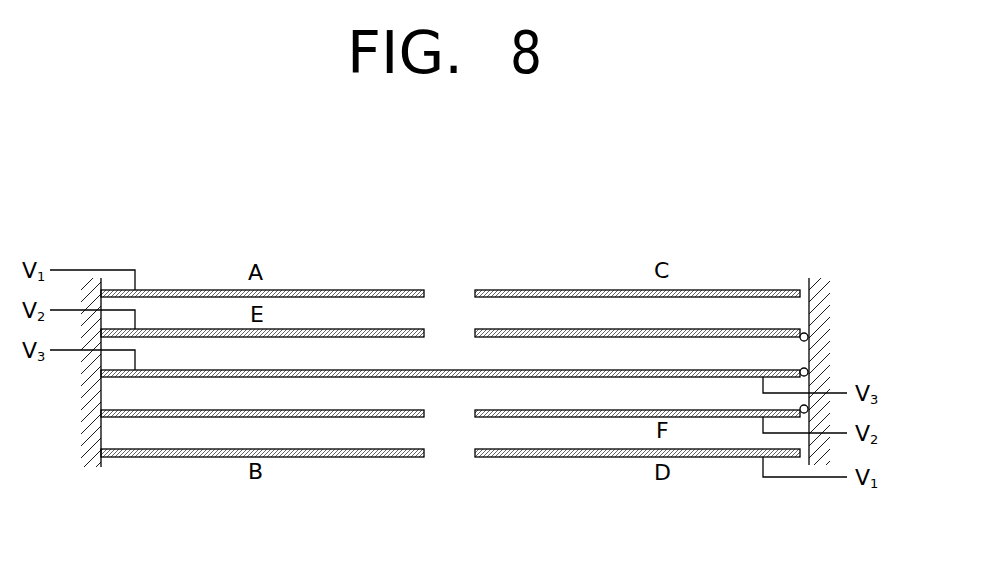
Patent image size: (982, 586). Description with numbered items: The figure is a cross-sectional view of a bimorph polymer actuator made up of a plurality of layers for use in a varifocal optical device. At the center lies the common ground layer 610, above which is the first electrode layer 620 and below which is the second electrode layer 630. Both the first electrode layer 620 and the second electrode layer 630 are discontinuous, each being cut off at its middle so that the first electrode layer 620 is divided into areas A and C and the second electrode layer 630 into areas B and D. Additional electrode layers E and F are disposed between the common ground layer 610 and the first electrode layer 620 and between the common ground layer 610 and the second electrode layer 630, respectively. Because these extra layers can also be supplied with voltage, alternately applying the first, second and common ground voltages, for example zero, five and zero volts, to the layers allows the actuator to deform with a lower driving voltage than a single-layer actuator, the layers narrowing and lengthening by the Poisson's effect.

The common ground layer 610 is at (745, 368).
The first electrode layer 620 is at (652, 260).
The second electrode layer 630 is at (653, 482).